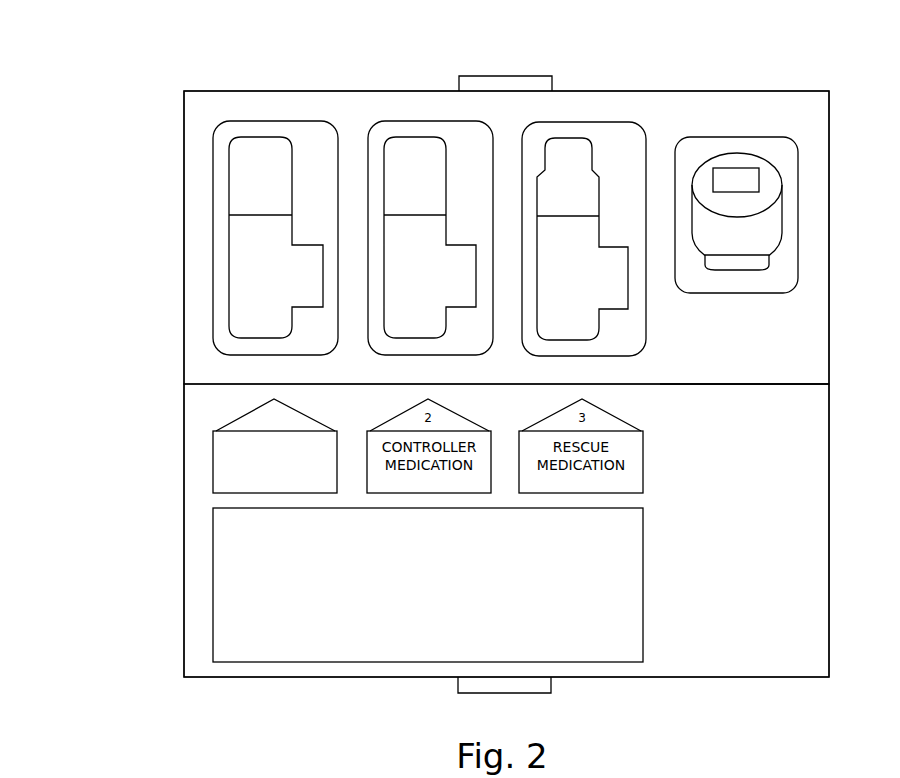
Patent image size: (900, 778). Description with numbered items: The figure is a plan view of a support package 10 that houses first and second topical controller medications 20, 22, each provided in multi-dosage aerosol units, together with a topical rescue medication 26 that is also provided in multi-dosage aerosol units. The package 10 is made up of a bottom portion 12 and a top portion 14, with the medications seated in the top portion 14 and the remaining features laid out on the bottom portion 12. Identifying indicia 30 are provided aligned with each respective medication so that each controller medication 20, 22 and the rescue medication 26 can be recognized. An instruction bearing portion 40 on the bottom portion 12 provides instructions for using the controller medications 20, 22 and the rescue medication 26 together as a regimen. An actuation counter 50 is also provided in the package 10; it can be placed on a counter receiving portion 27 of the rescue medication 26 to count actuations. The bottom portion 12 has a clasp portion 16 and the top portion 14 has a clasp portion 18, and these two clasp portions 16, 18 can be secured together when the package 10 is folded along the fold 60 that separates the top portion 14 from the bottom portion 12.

The support package 10 is at (90, 102).
The bottom portion 12 is at (183, 420).
The top portion 14 is at (183, 287).
The clasp portion 16 is at (470, 695).
The clasp portion 18 is at (513, 77).
The first topical controller medication 20 is at (229, 193).
The second topical controller medication 22 is at (405, 137).
The topical rescue medication 26 is at (599, 207).
The counter receiving portion 27 is at (537, 157).
The identifying indicia 30 is at (197, 465).
The instruction bearing portion 40 is at (211, 583).
The actuation counter 50 is at (782, 174).
The fold 60 is at (765, 385).